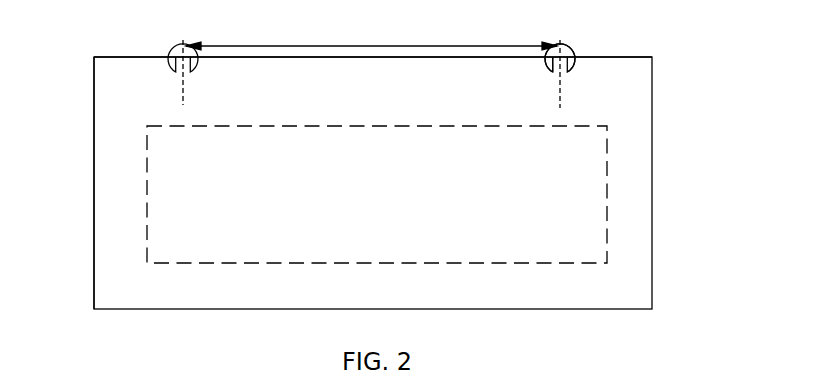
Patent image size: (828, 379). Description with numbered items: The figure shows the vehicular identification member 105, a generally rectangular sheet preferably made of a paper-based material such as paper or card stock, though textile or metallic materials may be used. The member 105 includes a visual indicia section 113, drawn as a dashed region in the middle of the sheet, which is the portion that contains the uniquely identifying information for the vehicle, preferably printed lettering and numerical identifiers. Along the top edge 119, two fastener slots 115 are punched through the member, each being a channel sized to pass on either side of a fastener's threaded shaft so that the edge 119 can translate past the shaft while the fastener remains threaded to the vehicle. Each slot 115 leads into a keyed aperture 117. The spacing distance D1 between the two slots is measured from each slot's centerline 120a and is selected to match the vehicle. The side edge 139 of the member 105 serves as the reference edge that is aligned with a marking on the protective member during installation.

The vehicular identification member 105 is at (712, 98).
The edge 139 is at (93, 172).
The edge 119 is at (323, 57).
The visual indicia section 113 is at (515, 263).
The slot centerline 120a is at (180, 47).
The fastener slot 115 is at (553, 62).
The keyed aperture 117 is at (574, 82).
The spacing distance D1 is at (355, 46).